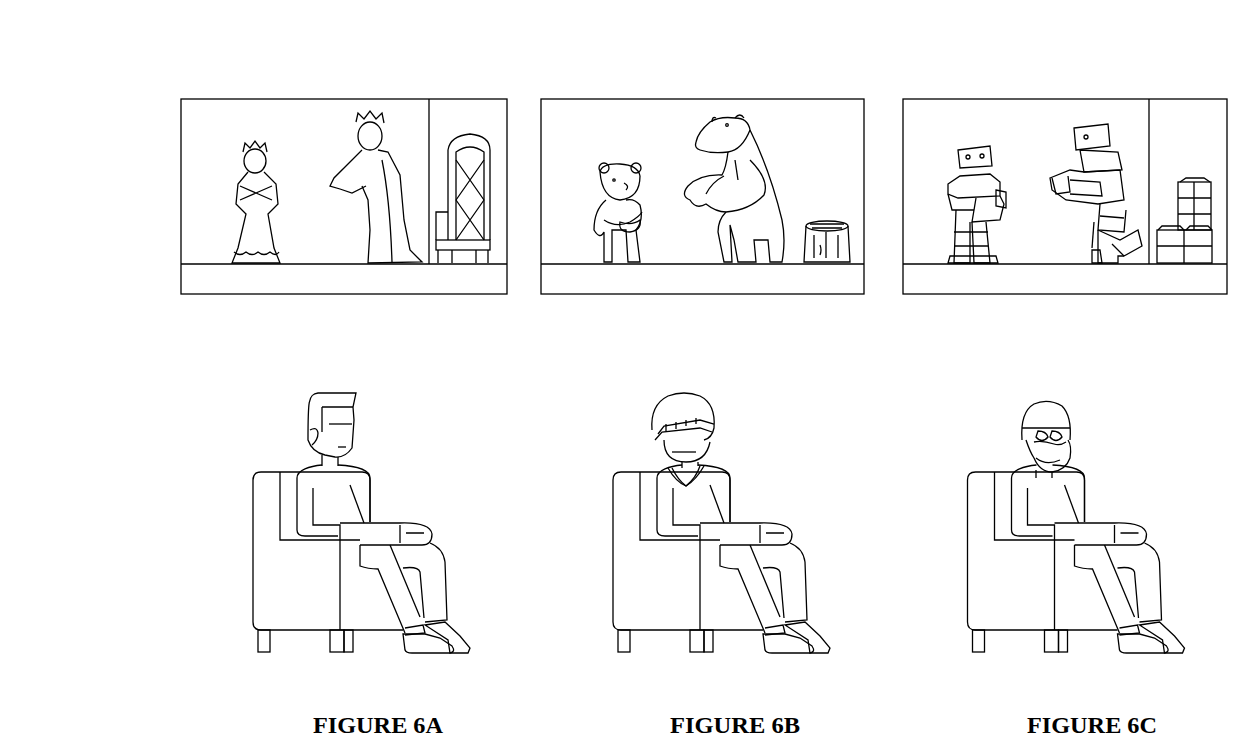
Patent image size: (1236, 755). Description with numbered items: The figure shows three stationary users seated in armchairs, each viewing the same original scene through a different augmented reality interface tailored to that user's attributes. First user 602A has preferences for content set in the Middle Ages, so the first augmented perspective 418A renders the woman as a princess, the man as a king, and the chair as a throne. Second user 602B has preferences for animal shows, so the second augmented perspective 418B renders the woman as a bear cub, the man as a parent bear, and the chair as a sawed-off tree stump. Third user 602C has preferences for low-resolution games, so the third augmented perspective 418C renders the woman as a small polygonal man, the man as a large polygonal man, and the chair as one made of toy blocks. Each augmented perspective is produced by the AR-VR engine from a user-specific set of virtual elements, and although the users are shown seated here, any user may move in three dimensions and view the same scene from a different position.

In FIG. 6A, the first augmented perspective 418A is at (185, 99).
In FIG. 6B, the second augmented perspective 418B is at (545, 99).
In FIG. 6C, the third augmented perspective 418C is at (907, 99).
In FIG. 6A, the first user 602A is at (309, 398).
In FIG. 6B, the second user 602B is at (664, 400).
In FIG. 6C, the third user 602C is at (1024, 412).